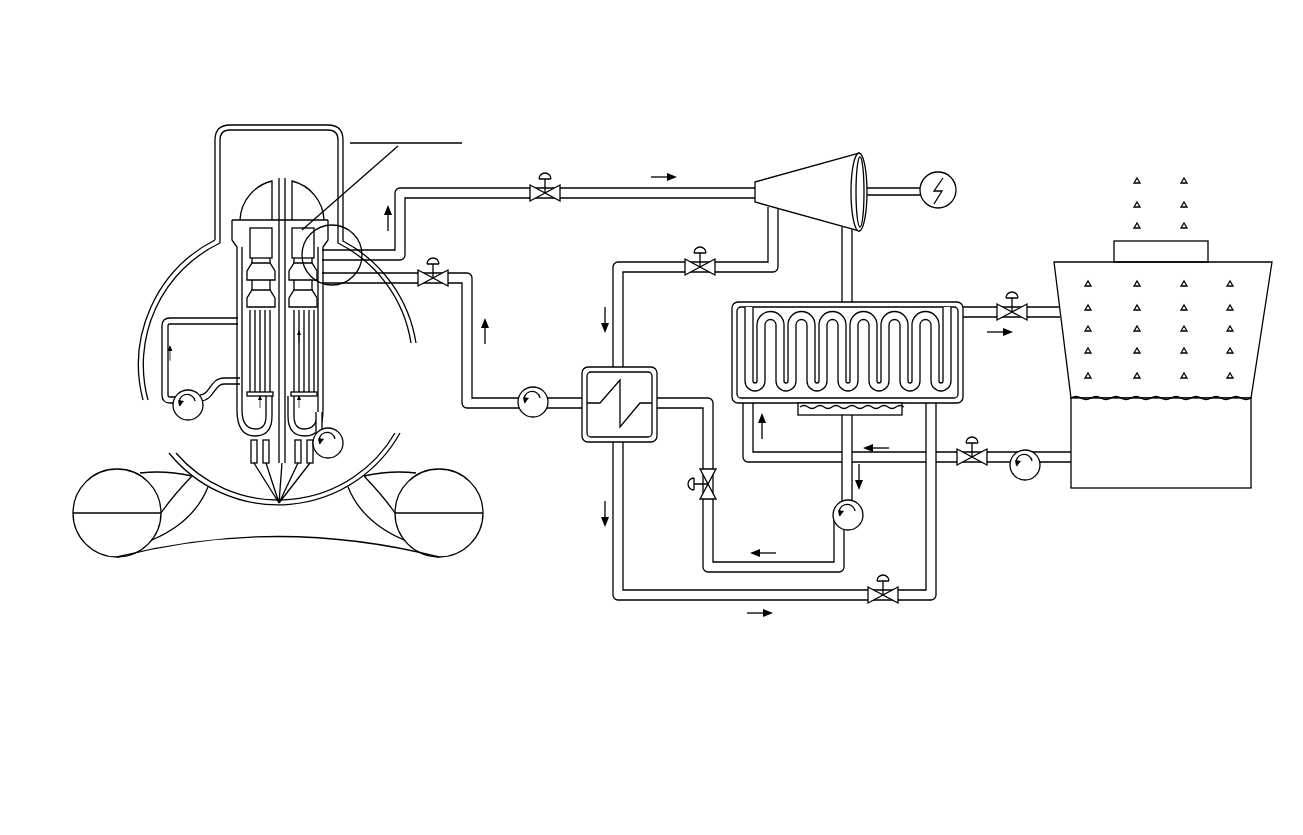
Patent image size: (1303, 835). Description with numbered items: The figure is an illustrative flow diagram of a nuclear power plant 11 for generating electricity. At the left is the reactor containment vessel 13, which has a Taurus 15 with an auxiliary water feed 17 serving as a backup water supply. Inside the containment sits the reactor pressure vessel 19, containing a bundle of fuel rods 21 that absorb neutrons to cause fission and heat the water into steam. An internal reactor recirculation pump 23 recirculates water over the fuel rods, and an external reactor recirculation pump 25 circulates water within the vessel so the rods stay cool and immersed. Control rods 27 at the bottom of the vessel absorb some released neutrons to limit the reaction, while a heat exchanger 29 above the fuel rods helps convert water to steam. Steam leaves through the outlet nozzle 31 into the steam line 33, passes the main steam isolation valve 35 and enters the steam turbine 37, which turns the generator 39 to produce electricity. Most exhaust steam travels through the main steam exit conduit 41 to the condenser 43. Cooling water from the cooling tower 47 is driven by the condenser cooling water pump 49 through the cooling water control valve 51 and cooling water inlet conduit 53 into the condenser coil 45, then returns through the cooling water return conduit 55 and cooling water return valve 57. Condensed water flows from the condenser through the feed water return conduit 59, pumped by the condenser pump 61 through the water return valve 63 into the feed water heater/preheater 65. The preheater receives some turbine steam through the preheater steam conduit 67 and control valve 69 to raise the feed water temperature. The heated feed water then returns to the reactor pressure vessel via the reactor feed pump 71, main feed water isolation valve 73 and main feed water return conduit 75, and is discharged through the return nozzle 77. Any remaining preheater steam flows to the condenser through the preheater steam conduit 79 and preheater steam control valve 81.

The nuclear power plant 11 is at (1085, 128).
The reactor containment vessel 13 is at (214, 172).
The Taurus 15 is at (107, 542).
The auxiliary water feed 17 is at (449, 542).
The reactor pressure vessel 19 is at (322, 333).
The bundle of fuel rods 21 is at (303, 378).
The internal reactor recirculation pump 23 is at (343, 447).
The external reactor recirculation pump 25 is at (192, 422).
The control rods 27 is at (279, 503).
The heat exchanger 29 is at (250, 268).
The outlet nozzle 31 is at (353, 237).
The steam line 33 is at (450, 188).
The main steam isolation valve 35 is at (552, 199).
The steam turbine 37 is at (806, 196).
The generator 39 is at (956, 191).
The main steam exit conduit 41 is at (852, 250).
The condenser 43 is at (731, 353).
The condenser coil 45 is at (930, 343).
The cooling tower 47 is at (1251, 451).
The condenser cooling water pump 49 is at (1028, 450).
The cooling water control valve 51 is at (980, 446).
The cooling water inlet conduit 53 is at (772, 460).
The cooling water return conduit 55 is at (1046, 308).
The cooling water return valve 57 is at (1015, 323).
The feed water return conduit 59 is at (855, 435).
The condenser pump 61 is at (866, 515).
The water return valve 63 is at (700, 490).
The feed water heater/preheater 65 is at (642, 445).
The preheater steam conduit 67 is at (656, 261).
The control valve 69 is at (702, 278).
The reactor feed pump 71 is at (530, 387).
The main feed water isolation valve 73 is at (434, 287).
The main feed water return conduit 75 is at (473, 302).
The return nozzle 77 is at (330, 288).
The preheater steam conduit 79 is at (680, 603).
The preheater steam control valve 81 is at (882, 605).